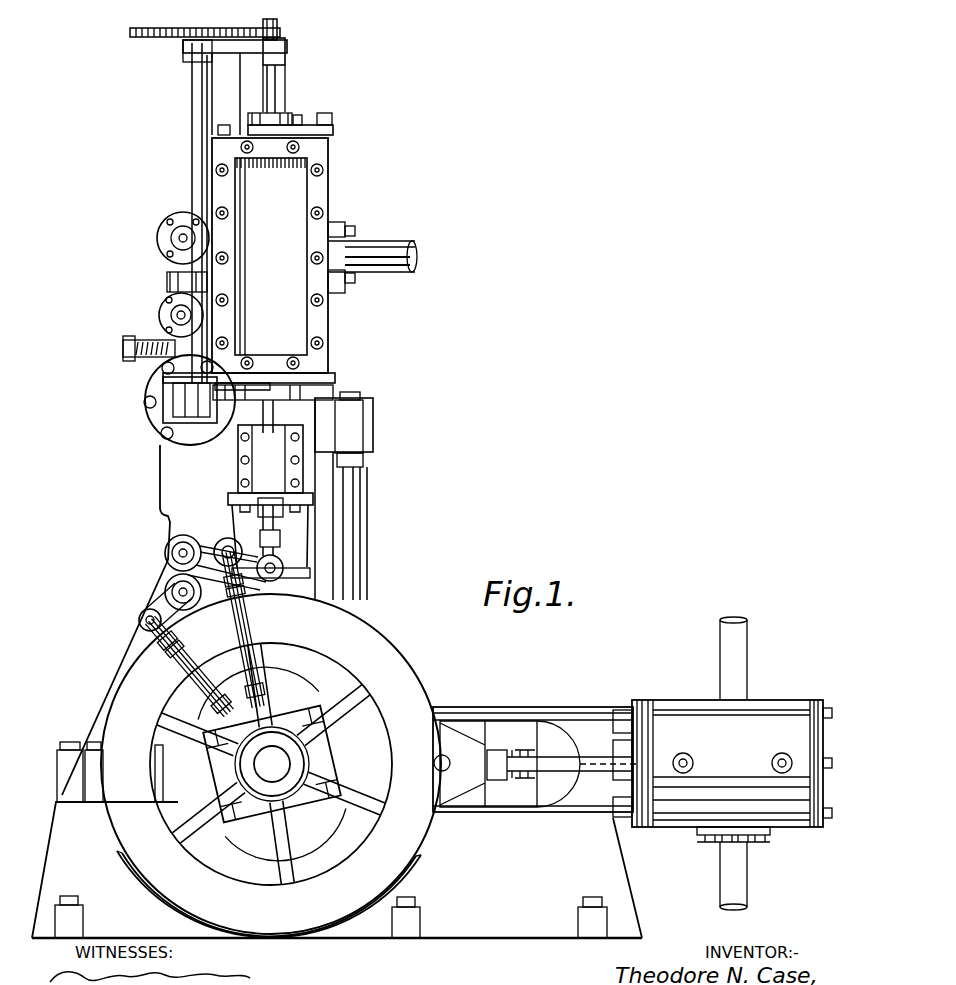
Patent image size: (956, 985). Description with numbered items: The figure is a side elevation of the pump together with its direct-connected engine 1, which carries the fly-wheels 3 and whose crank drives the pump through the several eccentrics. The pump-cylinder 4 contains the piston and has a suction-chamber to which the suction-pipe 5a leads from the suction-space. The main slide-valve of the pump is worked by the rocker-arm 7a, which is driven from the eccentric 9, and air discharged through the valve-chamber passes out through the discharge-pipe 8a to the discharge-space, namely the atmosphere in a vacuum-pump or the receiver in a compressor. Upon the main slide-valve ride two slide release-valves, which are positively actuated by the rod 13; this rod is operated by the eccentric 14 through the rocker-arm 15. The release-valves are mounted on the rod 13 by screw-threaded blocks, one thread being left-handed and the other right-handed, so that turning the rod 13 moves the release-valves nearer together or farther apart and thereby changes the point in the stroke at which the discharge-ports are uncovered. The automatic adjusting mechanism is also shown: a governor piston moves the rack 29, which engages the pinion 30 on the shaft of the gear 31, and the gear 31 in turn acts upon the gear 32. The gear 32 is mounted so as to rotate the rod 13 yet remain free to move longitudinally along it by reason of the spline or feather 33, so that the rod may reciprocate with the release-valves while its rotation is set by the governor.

The direct-connected engine 1 is at (560, 706).
The fly-wheels 3 is at (271, 765).
The pump-cylinder 4 is at (334, 133).
The suction-pipe 5a is at (378, 245).
The rocker-arm 7a is at (163, 593).
The discharge-pipe 8a is at (370, 252).
The eccentric 9 is at (215, 712).
The rod 13 is at (276, 100).
The eccentric 14 is at (297, 812).
The rocker-arm 15 is at (257, 592).
The rack 29 is at (172, 403).
The pinion 30 is at (218, 406).
The gear 31 is at (163, 40).
The gear 32 is at (278, 34).
The spline or feather 33 is at (272, 78).